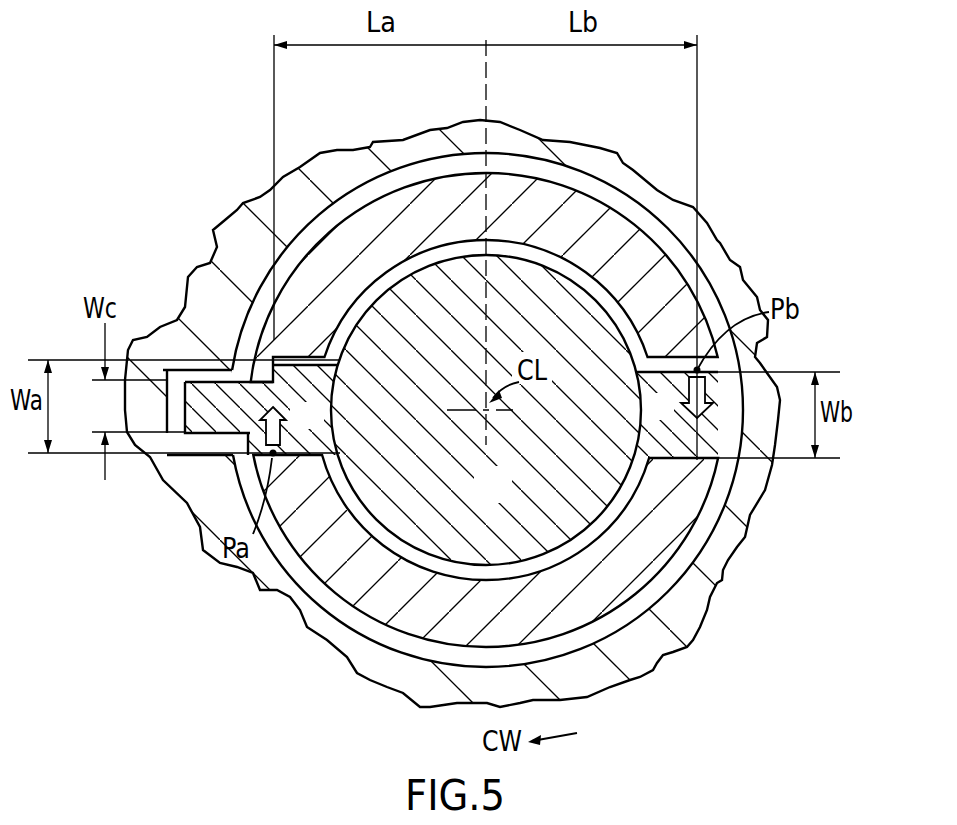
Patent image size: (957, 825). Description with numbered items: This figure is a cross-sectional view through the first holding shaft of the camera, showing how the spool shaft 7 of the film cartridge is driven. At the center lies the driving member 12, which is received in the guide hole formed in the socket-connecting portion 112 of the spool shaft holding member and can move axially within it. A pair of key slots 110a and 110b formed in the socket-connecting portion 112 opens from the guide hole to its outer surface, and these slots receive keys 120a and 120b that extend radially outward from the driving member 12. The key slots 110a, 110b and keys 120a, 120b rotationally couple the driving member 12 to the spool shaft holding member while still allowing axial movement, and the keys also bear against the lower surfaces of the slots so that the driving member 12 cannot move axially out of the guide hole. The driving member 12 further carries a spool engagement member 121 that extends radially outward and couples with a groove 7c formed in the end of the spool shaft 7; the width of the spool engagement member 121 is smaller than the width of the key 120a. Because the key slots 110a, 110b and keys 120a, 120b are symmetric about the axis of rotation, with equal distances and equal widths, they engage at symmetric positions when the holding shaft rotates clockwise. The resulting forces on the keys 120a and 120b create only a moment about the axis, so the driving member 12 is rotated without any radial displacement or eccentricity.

The spool shaft 7 is at (443, 413).
The groove 7c is at (225, 440).
The driving member 12 is at (507, 500).
The key slot 110a is at (451, 365).
The key slot 110b is at (530, 509).
The socket-connecting portion 112 is at (496, 442).
The key 120a is at (312, 453).
The key 120b is at (672, 456).
The spool engagement member 121 is at (182, 443).